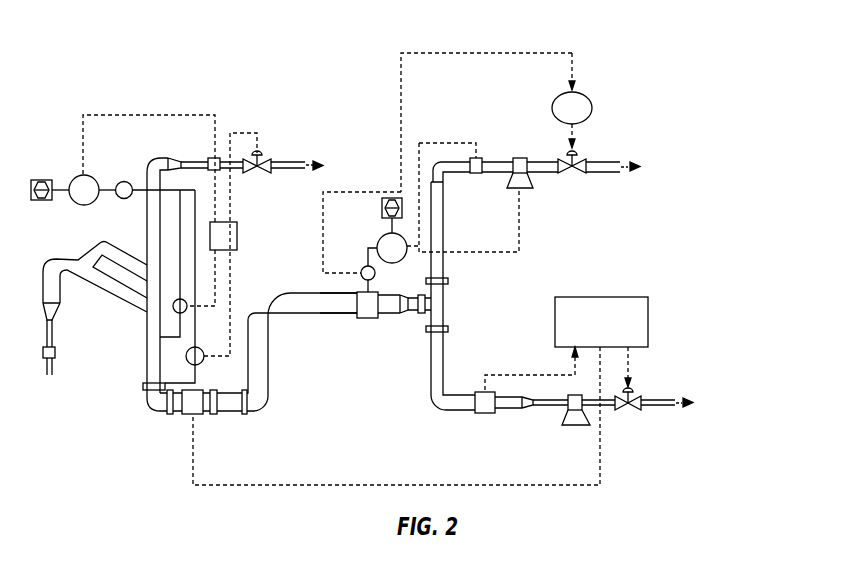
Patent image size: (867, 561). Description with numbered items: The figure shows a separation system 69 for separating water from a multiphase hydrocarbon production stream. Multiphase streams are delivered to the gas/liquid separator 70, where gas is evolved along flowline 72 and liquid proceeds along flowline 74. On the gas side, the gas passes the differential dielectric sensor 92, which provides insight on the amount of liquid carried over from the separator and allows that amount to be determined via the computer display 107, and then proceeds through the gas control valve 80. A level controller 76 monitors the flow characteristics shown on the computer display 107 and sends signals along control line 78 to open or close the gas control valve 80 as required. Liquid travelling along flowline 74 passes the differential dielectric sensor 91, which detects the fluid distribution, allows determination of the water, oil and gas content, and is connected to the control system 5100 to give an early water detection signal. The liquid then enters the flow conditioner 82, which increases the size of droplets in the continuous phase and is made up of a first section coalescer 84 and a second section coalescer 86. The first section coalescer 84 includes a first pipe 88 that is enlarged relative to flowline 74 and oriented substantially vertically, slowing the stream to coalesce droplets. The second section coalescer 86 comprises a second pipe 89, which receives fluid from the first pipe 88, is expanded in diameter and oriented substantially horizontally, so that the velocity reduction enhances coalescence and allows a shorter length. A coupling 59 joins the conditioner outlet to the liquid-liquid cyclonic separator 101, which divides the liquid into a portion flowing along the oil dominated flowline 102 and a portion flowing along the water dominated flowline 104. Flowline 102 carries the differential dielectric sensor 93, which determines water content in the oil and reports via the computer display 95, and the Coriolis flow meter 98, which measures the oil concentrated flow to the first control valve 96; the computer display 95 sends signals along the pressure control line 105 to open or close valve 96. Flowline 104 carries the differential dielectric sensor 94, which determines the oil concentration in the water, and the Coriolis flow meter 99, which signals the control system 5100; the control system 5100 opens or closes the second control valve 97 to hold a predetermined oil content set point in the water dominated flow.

The separation system 69 is at (131, 57).
The gas/liquid separator 70 is at (160, 426).
The flowline 72 is at (147, 232).
The flowline 74 is at (147, 355).
The level controller 76 is at (237, 232).
The control line 78 is at (248, 133).
The gas control valve 80 is at (264, 156).
The flow conditioner 82 is at (422, 427).
The first section coalescer 84 is at (286, 389).
The second section coalescer 86 is at (398, 331).
The first pipe 88 is at (268, 340).
The second pipe 89 is at (337, 314).
The differential dielectric sensor 91 is at (183, 414).
The differential dielectric sensor 92 is at (214, 170).
The differential dielectric sensor 93 is at (476, 173).
The differential dielectric sensor 94 is at (485, 414).
The computer display 95 is at (382, 206).
The first control valve 96 is at (583, 157).
The second control valve 97 is at (633, 411).
The Coriolis flow meter 98 is at (520, 157).
The Coriolis flow meter 99 is at (575, 426).
The liquid-liquid cyclonic separator 101 is at (443, 307).
The oil dominated flowline 102 is at (443, 221).
The water dominated flowline 104 is at (443, 358).
The pressure control line 105 is at (488, 51).
The computer display 107 is at (78, 178).
The coupling block 59 is at (366, 318).
The control system 5100 is at (648, 325).